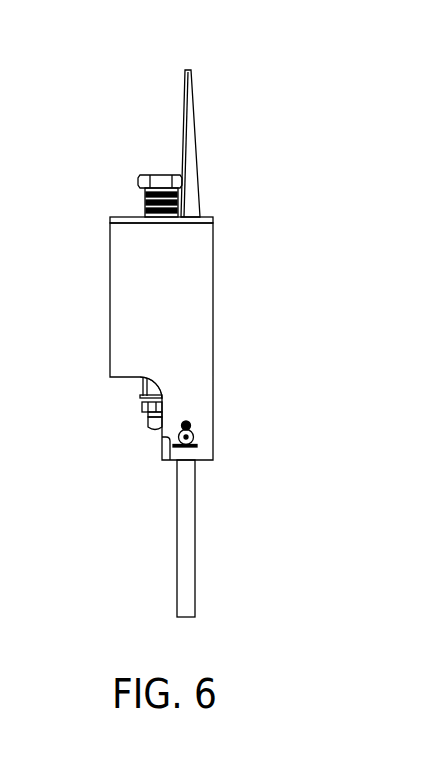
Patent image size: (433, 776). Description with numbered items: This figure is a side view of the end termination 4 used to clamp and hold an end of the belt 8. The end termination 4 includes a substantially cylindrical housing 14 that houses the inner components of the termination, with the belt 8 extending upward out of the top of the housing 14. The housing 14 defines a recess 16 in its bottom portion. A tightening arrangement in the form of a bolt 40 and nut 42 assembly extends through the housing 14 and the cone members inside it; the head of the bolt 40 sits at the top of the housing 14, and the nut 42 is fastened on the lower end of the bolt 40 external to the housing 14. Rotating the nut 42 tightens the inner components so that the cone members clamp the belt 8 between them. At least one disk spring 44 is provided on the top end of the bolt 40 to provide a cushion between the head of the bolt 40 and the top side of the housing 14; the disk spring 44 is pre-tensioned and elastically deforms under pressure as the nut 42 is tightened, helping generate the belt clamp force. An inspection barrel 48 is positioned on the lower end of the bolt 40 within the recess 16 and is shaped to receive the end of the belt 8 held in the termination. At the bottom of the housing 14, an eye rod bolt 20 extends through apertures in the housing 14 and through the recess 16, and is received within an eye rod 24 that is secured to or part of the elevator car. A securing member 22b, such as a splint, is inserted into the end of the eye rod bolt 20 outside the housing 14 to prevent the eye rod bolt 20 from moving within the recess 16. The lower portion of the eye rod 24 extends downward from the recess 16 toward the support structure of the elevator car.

The end termination 4 is at (256, 332).
The belt 8 is at (192, 146).
The housing 14 is at (127, 260).
The recess 16 is at (123, 376).
The eye rod bolt 20 is at (168, 458).
The securing member 22b is at (199, 444).
The eye rod 24 is at (183, 557).
The bolt 40 is at (160, 181).
The nut 42 is at (147, 408).
The disk spring 44 is at (148, 205).
The inspection barrel 48 is at (128, 387).